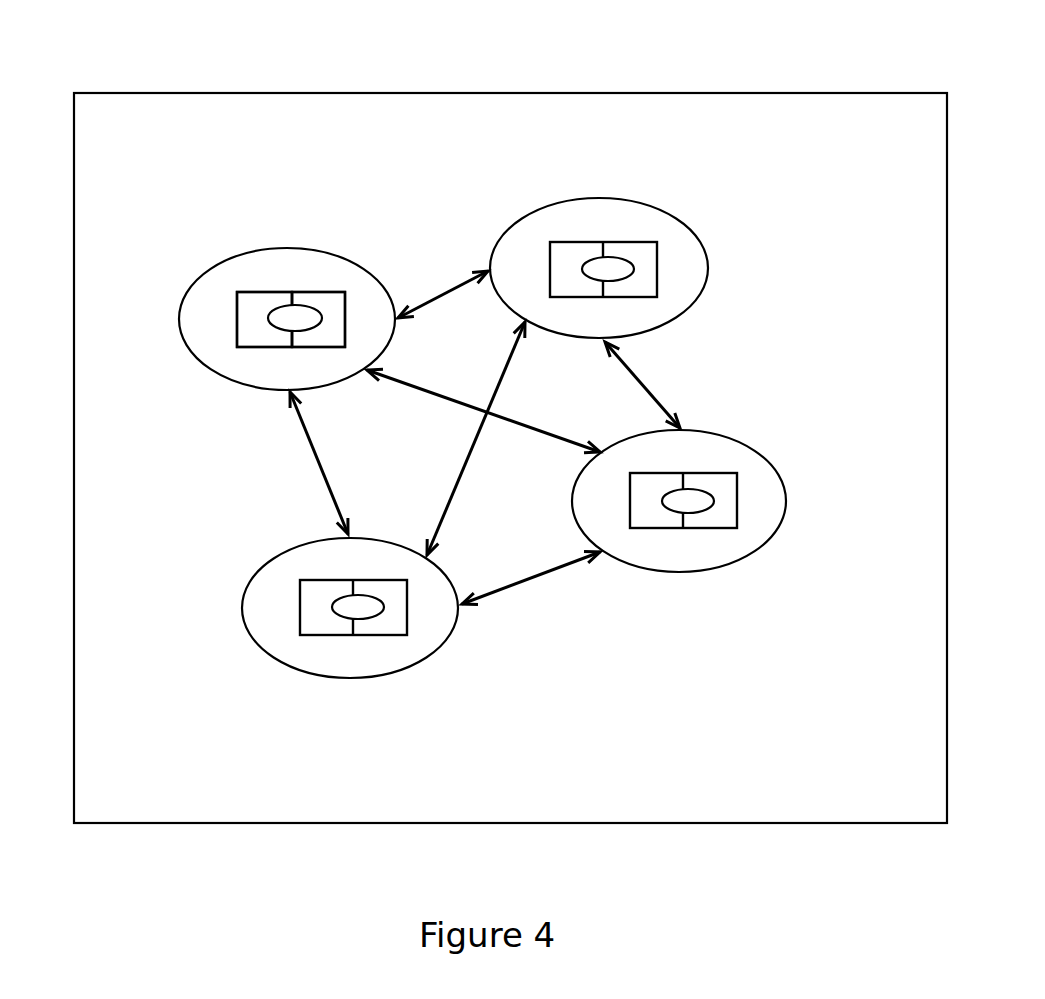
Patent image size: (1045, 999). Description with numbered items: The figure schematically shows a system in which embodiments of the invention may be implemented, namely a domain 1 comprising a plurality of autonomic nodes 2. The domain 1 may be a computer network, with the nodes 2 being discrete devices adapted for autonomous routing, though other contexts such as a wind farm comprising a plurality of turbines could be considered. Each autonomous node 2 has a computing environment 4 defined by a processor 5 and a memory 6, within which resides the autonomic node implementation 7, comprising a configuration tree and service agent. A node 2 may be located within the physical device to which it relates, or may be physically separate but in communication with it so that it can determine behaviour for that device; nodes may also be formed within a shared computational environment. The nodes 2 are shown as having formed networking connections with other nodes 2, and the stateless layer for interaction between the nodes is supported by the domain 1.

The domain 1 is at (738, 90).
The autonomic node 2 is at (467, 353).
The computing environment 4 is at (283, 306).
The processor 5 is at (228, 313).
The memory 6 is at (318, 292).
The autonomic node implementation 7 is at (292, 300).